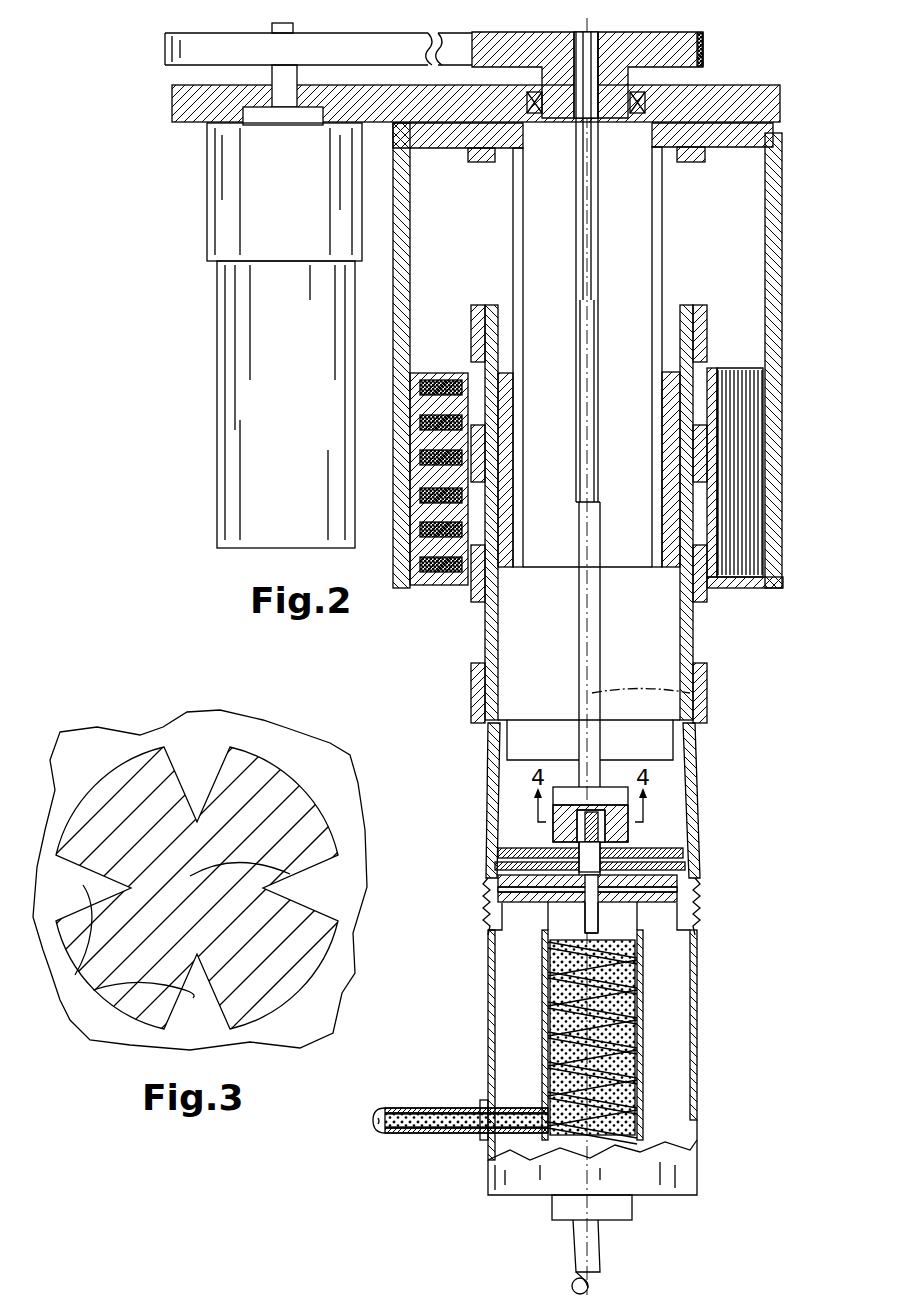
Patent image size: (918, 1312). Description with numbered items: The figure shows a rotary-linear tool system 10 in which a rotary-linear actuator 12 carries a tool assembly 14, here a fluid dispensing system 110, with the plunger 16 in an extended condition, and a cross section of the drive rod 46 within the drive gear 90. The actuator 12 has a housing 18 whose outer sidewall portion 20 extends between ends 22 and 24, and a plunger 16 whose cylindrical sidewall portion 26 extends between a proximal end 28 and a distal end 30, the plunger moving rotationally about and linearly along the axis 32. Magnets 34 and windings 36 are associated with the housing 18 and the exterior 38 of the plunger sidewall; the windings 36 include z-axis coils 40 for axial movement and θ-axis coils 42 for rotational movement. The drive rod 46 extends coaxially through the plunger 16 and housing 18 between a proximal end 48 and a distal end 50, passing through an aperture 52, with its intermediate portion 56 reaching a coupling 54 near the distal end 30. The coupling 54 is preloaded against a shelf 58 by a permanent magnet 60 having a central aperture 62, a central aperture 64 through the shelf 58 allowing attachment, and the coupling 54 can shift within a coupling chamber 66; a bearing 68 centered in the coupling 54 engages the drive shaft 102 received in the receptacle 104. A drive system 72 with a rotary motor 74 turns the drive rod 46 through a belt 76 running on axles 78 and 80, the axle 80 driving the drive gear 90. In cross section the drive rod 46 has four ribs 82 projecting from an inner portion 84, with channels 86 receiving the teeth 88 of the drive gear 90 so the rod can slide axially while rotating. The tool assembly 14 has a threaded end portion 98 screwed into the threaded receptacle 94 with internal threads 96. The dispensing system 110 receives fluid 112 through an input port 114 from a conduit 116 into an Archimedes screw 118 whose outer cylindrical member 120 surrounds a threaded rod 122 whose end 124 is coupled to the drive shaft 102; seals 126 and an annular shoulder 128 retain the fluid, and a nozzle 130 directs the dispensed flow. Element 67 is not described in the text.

In FIG. 2, the rotary-linear tool system 10 is at (790, 139).
In FIG. 2, the rotary-linear actuator 12 is at (795, 390).
In FIG. 2, the tool assembly 14 is at (708, 1028).
In FIG. 2, the plunger 16 is at (706, 634).
In FIG. 2, the housing 18 is at (795, 483).
In FIG. 2, the outer sidewall portion 20 is at (785, 326).
In FIG. 2, the proximal end of housing 22 is at (778, 86).
In FIG. 2, the distal end of housing 24 is at (748, 587).
In FIG. 2, the cylindrical sidewall portion 26 is at (692, 645).
In FIG. 2, the proximal end of plunger 28 is at (682, 300).
In FIG. 2, the distal end of plunger 30 is at (694, 750).
In FIG. 2, the axis 32 is at (707, 704).
In FIG. 2, the magnets 34 is at (706, 557).
In FIG. 2, the windings 36 is at (748, 360).
In FIG. 2, the exterior of plunger sidewall portion 38 is at (482, 630).
In FIG. 2, the z-axis coils 40 is at (432, 568).
In FIG. 2, the θ-axis coils 42 is at (740, 438).
In FIG. 2, the drive rod 46 is at (578, 622).
In FIG. 3, the drive rod 46 is at (210, 910).
In FIG. 2, the proximal end of drive rod 48 is at (588, 32).
In FIG. 2, the distal end of drive rod 50 is at (580, 773).
In FIG. 2, the aperture 52 is at (640, 92).
In FIG. 2, the coupling 54 is at (670, 810).
In FIG. 2, the intermediate portion of drive rod 56 is at (600, 447).
In FIG. 2, the shelf 58 is at (533, 868).
In FIG. 2, the permanent magnets 60 is at (668, 852).
In FIG. 2, the central aperture of magnet 62 is at (655, 845).
In FIG. 2, the central aperture of shelf 64 is at (498, 878).
In FIG. 2, the coupling chamber 66 is at (482, 773).
In FIG. 2, the insert 67 is at (506, 752).
In FIG. 2, the bearing 68 is at (537, 843).
In FIG. 2, the drive system 72 is at (205, 320).
In FIG. 2, the rotary motor 74 is at (285, 447).
In FIG. 2, the belt 76 is at (170, 46).
In FIG. 2, the motor axle 78 is at (325, 33).
In FIG. 2, the drive axle 80 is at (680, 33).
In FIG. 3, the ribs 82 is at (277, 792).
In FIG. 3, the inner portion 84 is at (285, 873).
In FIG. 3, the channels 86 is at (195, 793).
In FIG. 3, the teeth 88 is at (80, 985).
In FIG. 2, the drive gear 90 is at (545, 52).
In FIG. 3, the drive gear 90 is at (80, 1035).
In FIG. 2, the threaded receptacle 94 is at (677, 885).
In FIG. 2, the internal threads 96 is at (487, 927).
In FIG. 2, the threaded end portion 98 is at (652, 905).
In FIG. 2, the drive shaft 102 is at (586, 913).
In FIG. 2, the receptacle of coupling 104 is at (553, 830).
In FIG. 2, the fluid dispensing system 110 is at (697, 1058).
In FIG. 2, the fluid 112 is at (637, 1107).
In FIG. 2, the input port 114 is at (542, 1132).
In FIG. 2, the conduit 116 is at (418, 1120).
In FIG. 2, the Archimedes screw 118 is at (532, 993).
In FIG. 2, the outer cylindrical member 120 is at (633, 985).
In FIG. 2, the threaded rod 122 is at (602, 1018).
In FIG. 2, the end of threaded rod 124 is at (623, 953).
In FIG. 2, the seals 126 is at (695, 892).
In FIG. 2, the annular shoulder 128 is at (490, 900).
In FIG. 2, the nozzle 130 is at (600, 1252).